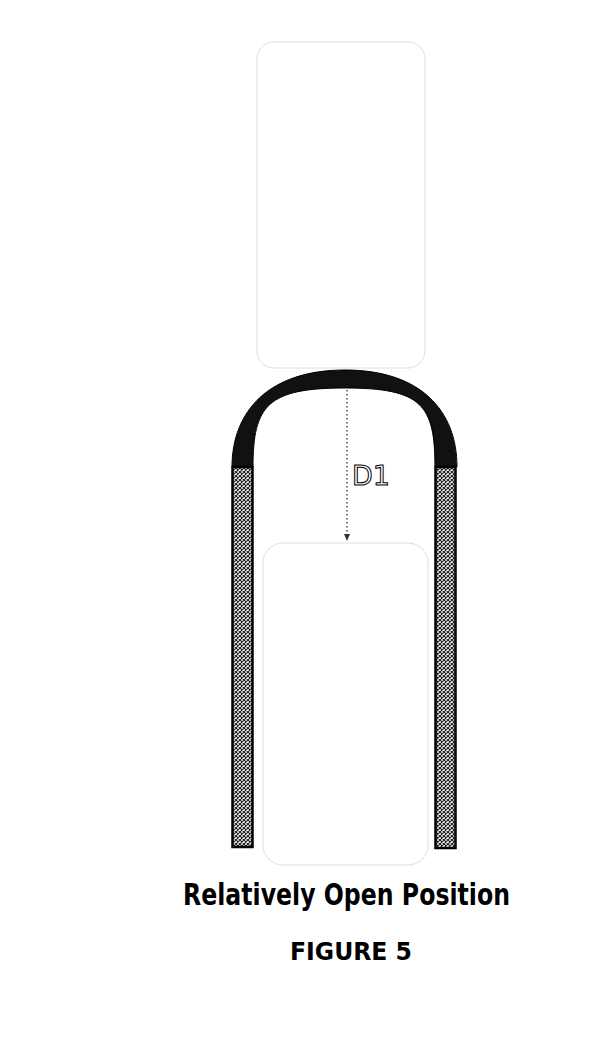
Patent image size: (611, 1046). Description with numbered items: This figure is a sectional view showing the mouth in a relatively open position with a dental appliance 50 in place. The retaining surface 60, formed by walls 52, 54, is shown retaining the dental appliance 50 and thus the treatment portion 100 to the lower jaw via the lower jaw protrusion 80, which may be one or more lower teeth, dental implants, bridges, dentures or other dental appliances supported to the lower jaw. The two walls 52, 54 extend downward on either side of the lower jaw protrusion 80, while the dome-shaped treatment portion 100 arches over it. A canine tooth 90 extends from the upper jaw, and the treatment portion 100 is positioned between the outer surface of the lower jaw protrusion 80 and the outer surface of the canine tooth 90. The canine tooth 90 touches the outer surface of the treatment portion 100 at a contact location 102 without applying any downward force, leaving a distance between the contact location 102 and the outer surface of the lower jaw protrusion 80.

The dental appliance 50 is at (294, 559).
The wall 52 is at (442, 772).
The wall 54 is at (245, 774).
The retaining surface 60 is at (323, 657).
The lower jaw protrusion 80 is at (302, 650).
The canine tooth 90 is at (268, 217).
The treatment portion 100 is at (248, 418).
The contact location 102 is at (337, 367).